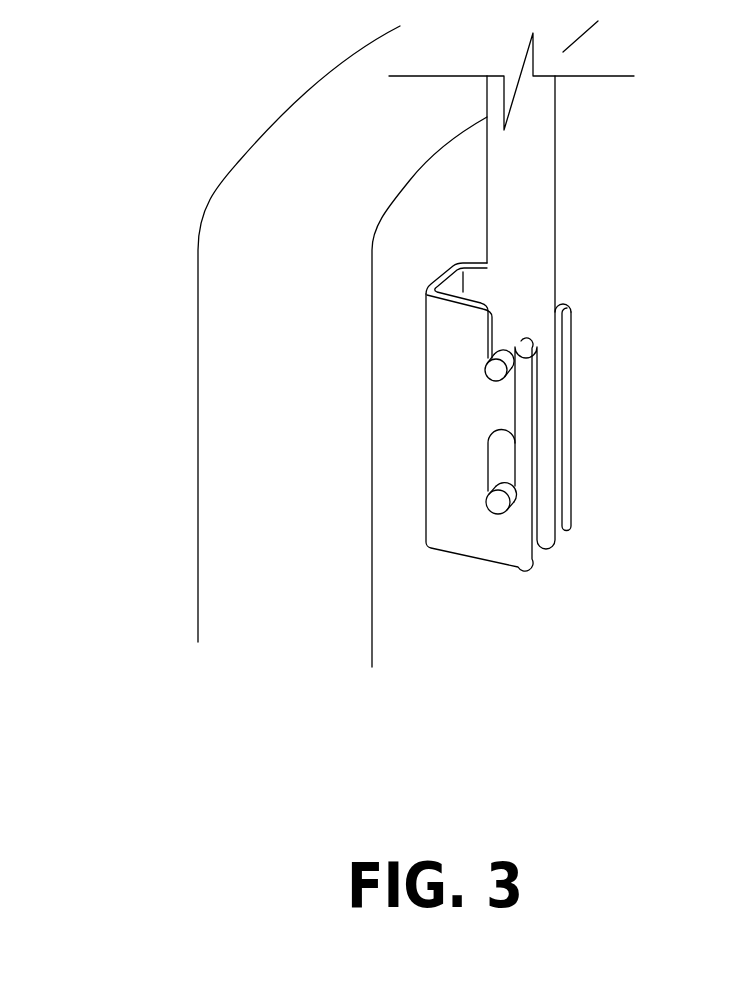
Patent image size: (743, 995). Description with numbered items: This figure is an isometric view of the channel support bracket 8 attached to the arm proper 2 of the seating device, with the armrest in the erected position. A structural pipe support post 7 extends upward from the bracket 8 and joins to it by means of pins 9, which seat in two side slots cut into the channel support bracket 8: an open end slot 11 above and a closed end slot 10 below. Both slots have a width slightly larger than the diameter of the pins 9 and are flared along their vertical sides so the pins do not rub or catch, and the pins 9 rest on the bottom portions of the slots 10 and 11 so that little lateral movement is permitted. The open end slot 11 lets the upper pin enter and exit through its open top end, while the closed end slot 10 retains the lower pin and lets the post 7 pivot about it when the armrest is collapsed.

The arm proper 2 is at (258, 282).
The structural pipe support post 7 is at (522, 157).
The channel support bracket 8 is at (488, 545).
The pins 9 is at (510, 495).
The closed end slot 10 is at (488, 468).
The open end slot 11 is at (487, 338).